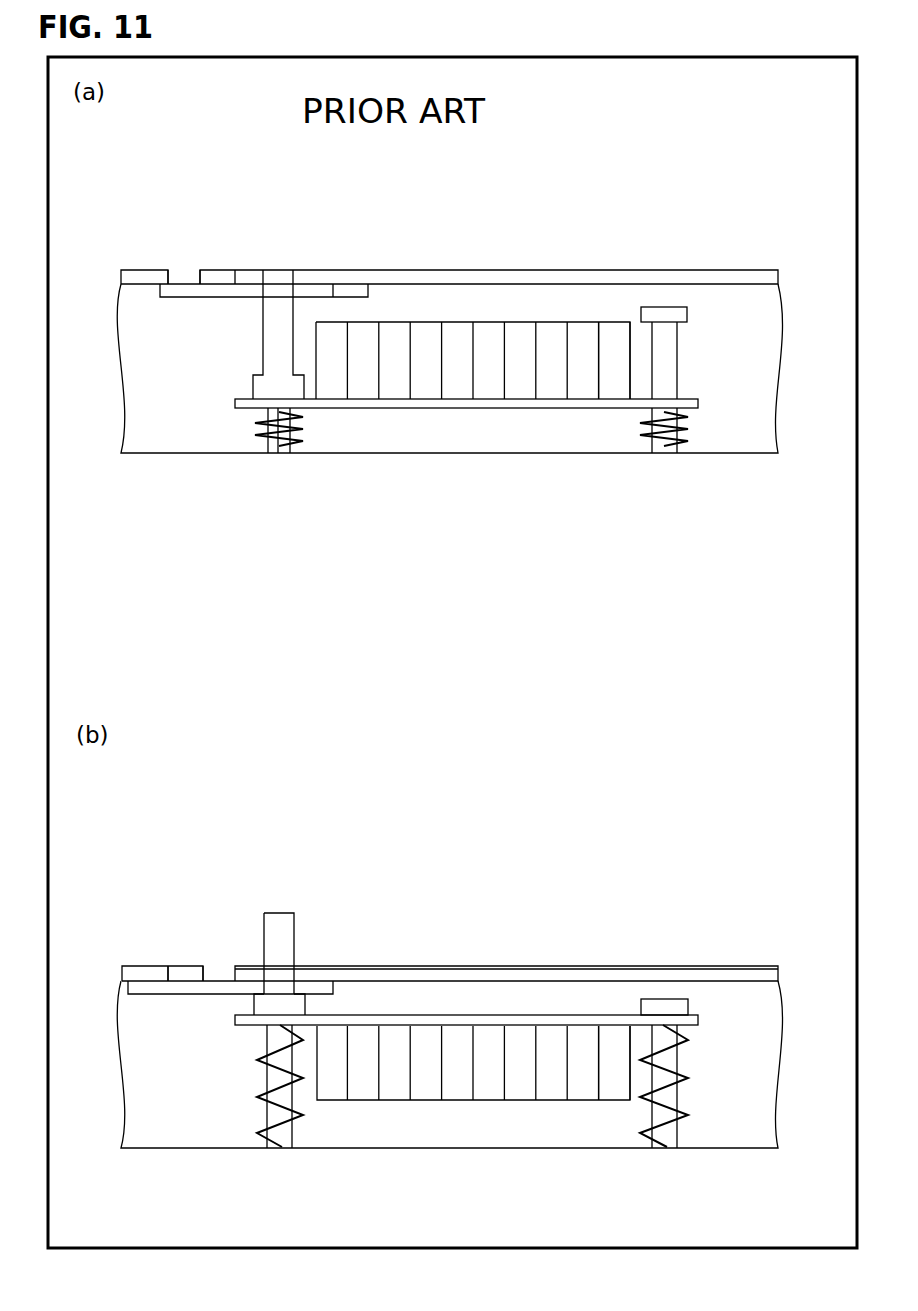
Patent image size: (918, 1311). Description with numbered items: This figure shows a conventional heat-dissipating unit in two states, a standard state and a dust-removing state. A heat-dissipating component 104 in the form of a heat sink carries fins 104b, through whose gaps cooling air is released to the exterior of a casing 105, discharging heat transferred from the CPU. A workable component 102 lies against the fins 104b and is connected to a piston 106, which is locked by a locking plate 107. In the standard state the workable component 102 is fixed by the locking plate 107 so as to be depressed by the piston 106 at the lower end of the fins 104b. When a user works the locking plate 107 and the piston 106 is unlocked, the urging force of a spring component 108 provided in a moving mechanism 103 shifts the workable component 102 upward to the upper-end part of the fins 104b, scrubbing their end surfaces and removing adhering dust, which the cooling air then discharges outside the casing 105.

The workable component 102 is at (458, 403).
The moving mechanism 103 is at (670, 317).
The heat-dissipating component 104 is at (490, 320).
The fins 104b is at (572, 353).
The casing 105 is at (405, 278).
The piston 106 is at (280, 315).
The locking plate 107 is at (217, 280).
The spring component 108 is at (300, 442).